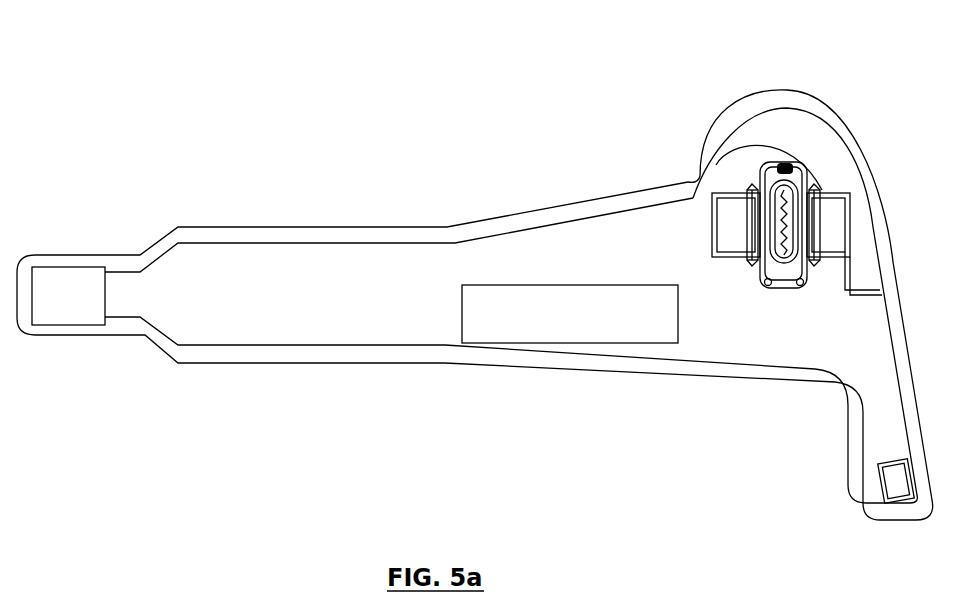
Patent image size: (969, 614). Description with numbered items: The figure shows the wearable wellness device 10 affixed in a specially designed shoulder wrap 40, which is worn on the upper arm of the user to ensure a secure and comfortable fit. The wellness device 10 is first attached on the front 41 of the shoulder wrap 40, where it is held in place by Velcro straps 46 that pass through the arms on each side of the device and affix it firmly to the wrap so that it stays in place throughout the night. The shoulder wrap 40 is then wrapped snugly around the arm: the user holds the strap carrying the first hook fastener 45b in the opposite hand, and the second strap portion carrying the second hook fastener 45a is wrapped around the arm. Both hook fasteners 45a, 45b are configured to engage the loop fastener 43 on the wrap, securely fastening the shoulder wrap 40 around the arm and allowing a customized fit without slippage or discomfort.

The shoulder wrap 40 is at (312, 101).
The front of the shoulder wrap 41 is at (800, 120).
The wellness device 10 is at (763, 168).
The loop fastener 43 is at (615, 320).
The second hook fastener 45a is at (82, 303).
The first hook fastener 45b is at (890, 473).
The Velcro straps 46 is at (726, 243).